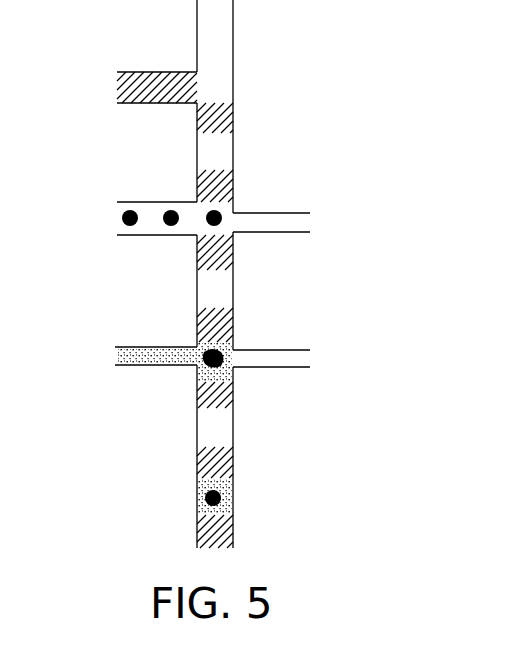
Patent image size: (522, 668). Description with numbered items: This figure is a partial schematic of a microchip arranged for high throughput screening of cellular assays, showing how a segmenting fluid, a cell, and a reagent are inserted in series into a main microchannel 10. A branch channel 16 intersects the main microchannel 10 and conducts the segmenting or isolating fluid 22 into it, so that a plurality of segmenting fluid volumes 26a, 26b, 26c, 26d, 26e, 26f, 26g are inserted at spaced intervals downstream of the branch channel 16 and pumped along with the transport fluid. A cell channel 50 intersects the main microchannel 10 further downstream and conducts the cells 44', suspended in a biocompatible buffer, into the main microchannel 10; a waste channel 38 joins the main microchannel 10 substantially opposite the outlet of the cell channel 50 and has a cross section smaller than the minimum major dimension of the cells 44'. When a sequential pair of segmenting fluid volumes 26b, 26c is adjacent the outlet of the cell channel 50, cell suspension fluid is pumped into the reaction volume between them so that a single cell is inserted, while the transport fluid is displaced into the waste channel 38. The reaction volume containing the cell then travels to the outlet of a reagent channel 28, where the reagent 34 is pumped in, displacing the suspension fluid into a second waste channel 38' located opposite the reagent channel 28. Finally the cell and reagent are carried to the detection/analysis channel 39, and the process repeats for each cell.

The main microchannel 10 is at (234, 58).
The branch channel 16 is at (163, 72).
The segmenting fluid 22 is at (133, 87).
The segmenting fluid volume 26a is at (222, 118).
The segmenting fluid volume 26b is at (222, 192).
The segmenting fluid volume 26c is at (220, 260).
The segmenting fluid volume 26d is at (222, 322).
The segmenting fluid volume 26e is at (220, 398).
The segmenting fluid volume 26f is at (219, 468).
The segmenting fluid volume 26g is at (222, 528).
The reagent channel 28 is at (152, 347).
The reagent 34 is at (162, 363).
The waste channel 38 is at (283, 211).
The second waste channel 38' is at (298, 349).
The detection/analysis channel 39 is at (194, 449).
The cells 44' is at (165, 244).
The cell channel 50 is at (155, 202).